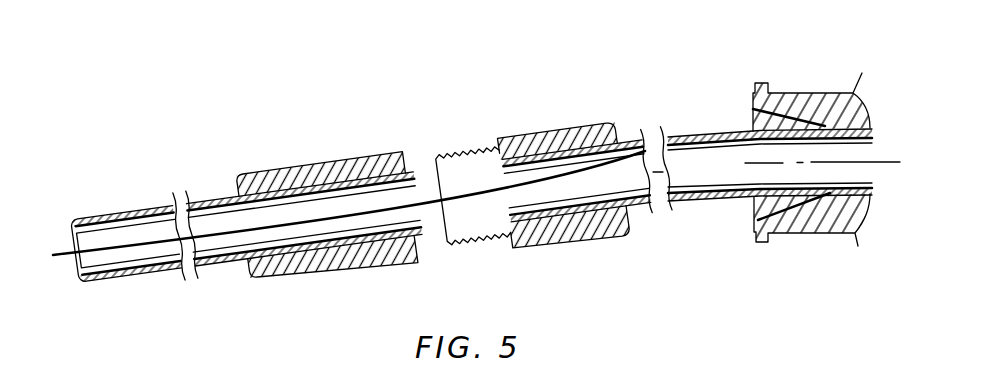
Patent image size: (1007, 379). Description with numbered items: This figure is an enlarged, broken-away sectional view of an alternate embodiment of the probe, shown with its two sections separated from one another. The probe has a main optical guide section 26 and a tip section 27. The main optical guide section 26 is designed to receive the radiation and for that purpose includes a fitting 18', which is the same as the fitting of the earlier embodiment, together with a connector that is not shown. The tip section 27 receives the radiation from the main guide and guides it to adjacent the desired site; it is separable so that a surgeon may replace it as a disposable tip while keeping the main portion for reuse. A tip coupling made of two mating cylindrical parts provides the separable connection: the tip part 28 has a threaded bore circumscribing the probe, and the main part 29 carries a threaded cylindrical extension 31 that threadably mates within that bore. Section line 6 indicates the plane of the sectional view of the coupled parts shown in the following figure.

The tip section 27 is at (185, 162).
The section line 6- 6 is at (578, 113).
The tip part 28 is at (310, 162).
The threaded cylindrical extension 31 is at (461, 151).
The main part 29 is at (527, 135).
The main optical guide section 26 is at (672, 104).
The fitting 18' is at (811, 150).